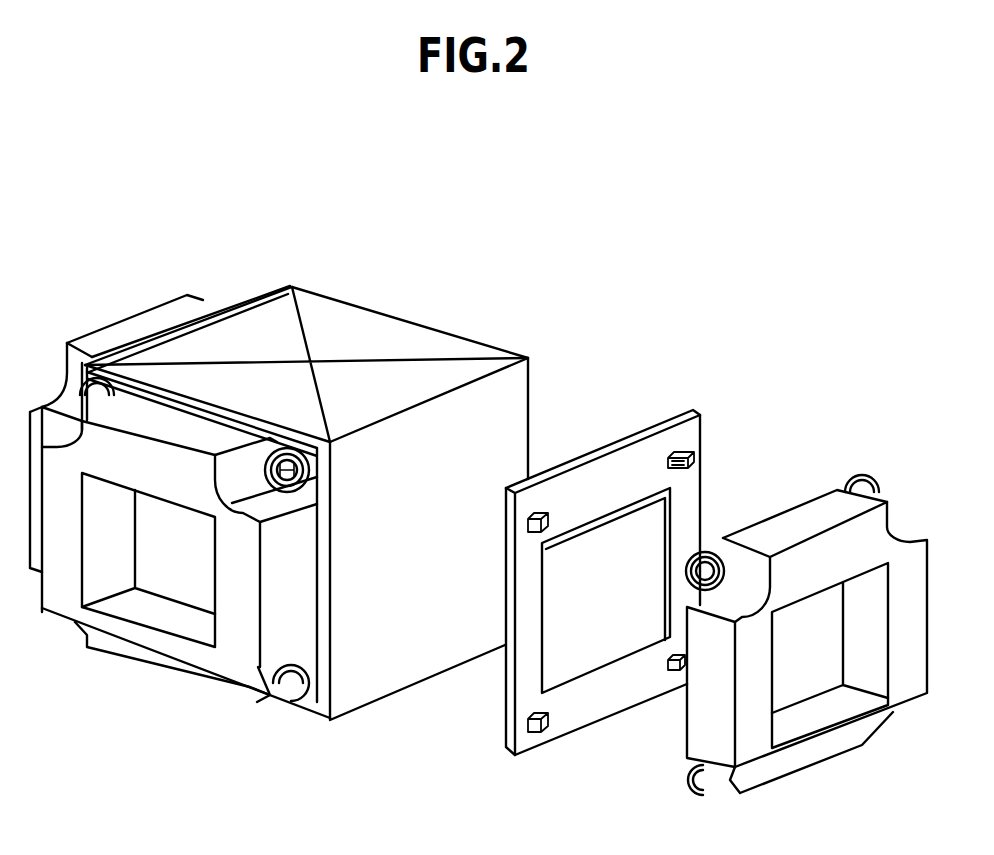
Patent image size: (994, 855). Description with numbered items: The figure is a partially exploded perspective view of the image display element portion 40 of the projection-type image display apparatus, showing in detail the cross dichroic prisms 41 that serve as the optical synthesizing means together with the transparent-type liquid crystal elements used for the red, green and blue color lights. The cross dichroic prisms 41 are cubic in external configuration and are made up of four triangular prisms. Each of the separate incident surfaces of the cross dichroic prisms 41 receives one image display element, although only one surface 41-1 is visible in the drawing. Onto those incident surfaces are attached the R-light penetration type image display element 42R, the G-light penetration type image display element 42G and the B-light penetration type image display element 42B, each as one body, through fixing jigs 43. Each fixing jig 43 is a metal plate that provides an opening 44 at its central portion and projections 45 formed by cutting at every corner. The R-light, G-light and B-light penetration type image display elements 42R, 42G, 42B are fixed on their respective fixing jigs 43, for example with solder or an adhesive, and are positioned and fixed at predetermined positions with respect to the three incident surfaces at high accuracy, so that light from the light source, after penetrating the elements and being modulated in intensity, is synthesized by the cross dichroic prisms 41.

The image display element portion 40 is at (282, 278).
The cross dichroic prisms 41 is at (347, 322).
The incident surface 41-1 is at (385, 655).
The R-light penetration type image display element 42R is at (148, 327).
The B-light penetration type image display element 42B is at (178, 582).
The G-light penetration type image display element 42G is at (826, 713).
The fixing jig 43 is at (590, 702).
The opening 44 is at (607, 538).
The projections 45 is at (697, 455).